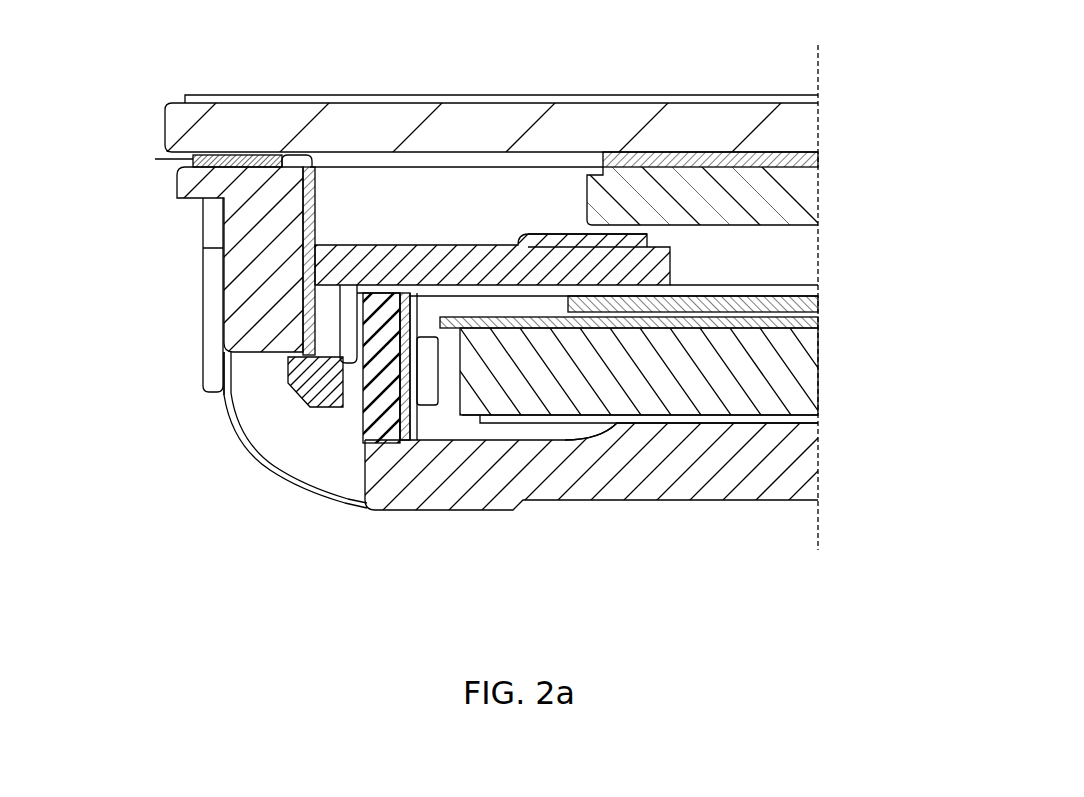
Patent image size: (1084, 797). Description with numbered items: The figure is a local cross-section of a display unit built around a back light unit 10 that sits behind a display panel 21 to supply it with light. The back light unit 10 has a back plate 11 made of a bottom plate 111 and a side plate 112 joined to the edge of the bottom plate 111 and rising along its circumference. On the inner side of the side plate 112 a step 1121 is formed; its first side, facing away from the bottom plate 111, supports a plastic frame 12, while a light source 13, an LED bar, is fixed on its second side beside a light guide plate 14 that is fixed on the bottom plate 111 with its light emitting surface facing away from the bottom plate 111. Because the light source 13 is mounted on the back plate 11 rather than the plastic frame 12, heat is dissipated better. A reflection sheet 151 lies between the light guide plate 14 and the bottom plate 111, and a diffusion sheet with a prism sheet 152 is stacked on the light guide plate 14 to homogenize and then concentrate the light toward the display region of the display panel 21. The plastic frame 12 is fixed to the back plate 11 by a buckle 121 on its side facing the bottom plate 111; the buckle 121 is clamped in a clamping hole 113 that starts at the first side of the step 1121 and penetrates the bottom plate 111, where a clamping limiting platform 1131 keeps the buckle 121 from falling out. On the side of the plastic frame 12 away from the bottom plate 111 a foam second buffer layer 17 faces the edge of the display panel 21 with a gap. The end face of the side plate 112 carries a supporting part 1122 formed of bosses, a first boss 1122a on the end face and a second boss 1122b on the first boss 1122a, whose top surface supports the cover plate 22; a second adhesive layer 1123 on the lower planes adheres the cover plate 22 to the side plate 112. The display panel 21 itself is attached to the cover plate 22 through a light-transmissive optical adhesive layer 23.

The back light unit 10 is at (905, 500).
The back plate 11 is at (720, 502).
The bottom plate 111 is at (637, 480).
The side plate 112 is at (242, 270).
The step 1121 is at (381, 382).
The supporting part 1122 is at (334, 87).
The first boss 1122a is at (257, 162).
The second boss 1122b is at (295, 163).
The second adhesive layer 1123 is at (160, 159).
The clamping hole 113 is at (327, 432).
The clamping limiting platform 1131 is at (250, 355).
The plastic frame 12 is at (672, 262).
The buckle 121 is at (295, 387).
The light source 13 is at (426, 377).
The light guide plate 14 is at (800, 362).
The reflection sheet 151 is at (800, 417).
The prism sheet 152 is at (800, 303).
The second buffer layer 17 is at (650, 234).
The display panel 21 is at (800, 193).
The cover plate 22 is at (798, 125).
The optical adhesive layer 23 is at (800, 160).